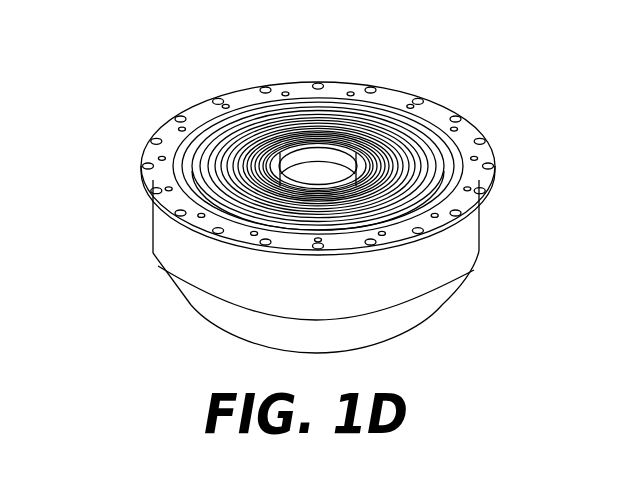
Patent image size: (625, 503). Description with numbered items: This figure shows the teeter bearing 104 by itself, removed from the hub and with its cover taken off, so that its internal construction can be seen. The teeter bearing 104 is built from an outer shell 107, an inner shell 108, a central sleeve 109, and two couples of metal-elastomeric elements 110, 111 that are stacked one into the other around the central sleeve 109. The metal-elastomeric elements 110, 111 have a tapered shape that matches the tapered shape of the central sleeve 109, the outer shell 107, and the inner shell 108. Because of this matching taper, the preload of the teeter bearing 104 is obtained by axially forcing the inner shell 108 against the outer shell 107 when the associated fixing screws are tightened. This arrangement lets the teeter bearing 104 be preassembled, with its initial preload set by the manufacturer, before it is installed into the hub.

The teeter bearing 104 is at (145, 203).
The outer shell 107 is at (413, 303).
The inner shell 108 is at (430, 108).
The central sleeve 109 is at (328, 145).
The metal-elastomeric element 110 is at (205, 120).
The metal-elastomeric element 111 is at (237, 150).